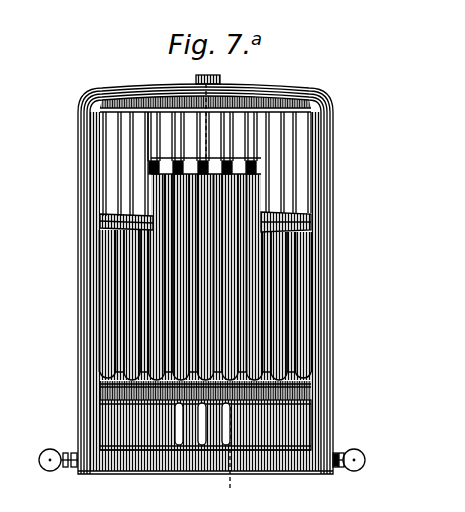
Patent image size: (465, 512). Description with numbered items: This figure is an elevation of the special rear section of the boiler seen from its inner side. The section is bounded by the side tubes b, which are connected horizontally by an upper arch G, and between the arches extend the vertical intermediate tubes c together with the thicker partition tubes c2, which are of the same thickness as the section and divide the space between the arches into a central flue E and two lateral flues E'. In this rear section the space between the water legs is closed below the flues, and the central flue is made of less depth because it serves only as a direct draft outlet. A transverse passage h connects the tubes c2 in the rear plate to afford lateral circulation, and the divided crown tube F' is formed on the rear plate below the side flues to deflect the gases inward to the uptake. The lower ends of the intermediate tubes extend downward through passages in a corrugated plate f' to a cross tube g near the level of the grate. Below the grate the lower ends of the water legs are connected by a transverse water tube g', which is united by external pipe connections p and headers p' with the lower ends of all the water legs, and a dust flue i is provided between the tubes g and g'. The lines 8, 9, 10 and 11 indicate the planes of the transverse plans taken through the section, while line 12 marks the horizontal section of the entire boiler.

The side tubes b is at (84, 145).
The arch G is at (272, 96).
The section line 12 is at (219, 283).
The lateral flues E' is at (125, 139).
The central flue E is at (204, 118).
The transverse passage h is at (218, 145).
The intermediate tubes c is at (277, 125).
The partition tubes c2 is at (255, 146).
The divided crown tube F' is at (205, 218).
The corrugated plate f' is at (232, 277).
The cross tube g is at (178, 378).
The section line 9 is at (66, 380).
The section line 10 is at (66, 418).
The dust flue i is at (218, 439).
The transverse water tube g' is at (205, 479).
The section line 8 is at (66, 308).
The section line 11 is at (66, 185).
The headers p' is at (206, 460).
The external pipe connections p is at (335, 479).